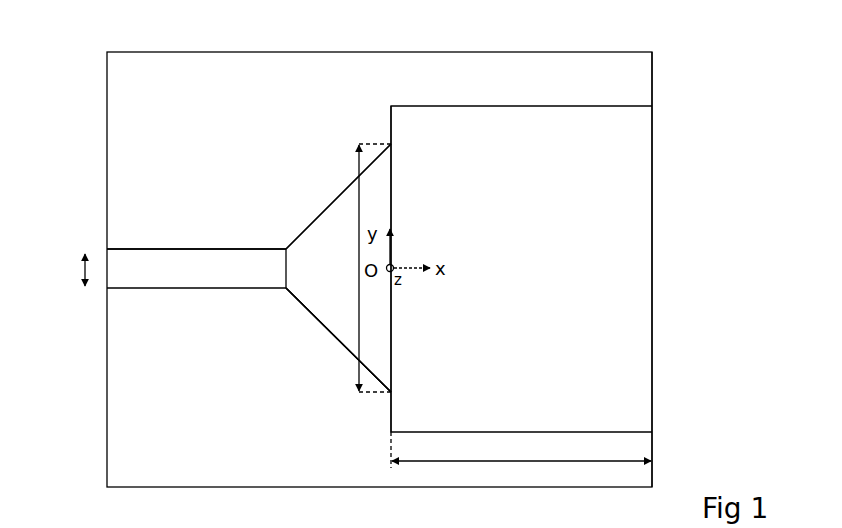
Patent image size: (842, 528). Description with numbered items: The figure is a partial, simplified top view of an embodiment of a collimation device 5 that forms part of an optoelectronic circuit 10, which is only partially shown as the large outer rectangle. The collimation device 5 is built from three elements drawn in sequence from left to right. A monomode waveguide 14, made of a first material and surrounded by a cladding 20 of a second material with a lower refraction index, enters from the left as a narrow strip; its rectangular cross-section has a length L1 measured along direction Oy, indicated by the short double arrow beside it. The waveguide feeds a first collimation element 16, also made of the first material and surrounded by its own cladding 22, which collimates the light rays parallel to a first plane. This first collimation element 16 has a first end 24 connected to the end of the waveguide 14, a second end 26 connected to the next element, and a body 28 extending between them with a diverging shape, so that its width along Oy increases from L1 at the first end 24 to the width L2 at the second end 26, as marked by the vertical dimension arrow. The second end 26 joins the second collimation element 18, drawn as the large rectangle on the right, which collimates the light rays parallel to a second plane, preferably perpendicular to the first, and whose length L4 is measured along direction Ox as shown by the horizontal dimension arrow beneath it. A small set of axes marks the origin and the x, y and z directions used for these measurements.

The optoelectronic circuit 10 is at (605, 51).
The collimation device 5 is at (655, 90).
The second collimation element 18 is at (622, 186).
The second end 26 is at (392, 175).
The monomode waveguide 14 is at (148, 268).
The cladding 20 is at (160, 247).
The first collimation element 16 is at (306, 224).
The body 28 is at (328, 207).
The first end 24 is at (295, 265).
The cladding 22 is at (345, 362).
The length of the waveguide cross-section L1 is at (67, 271).
The width at second end L2 is at (358, 163).
The length of the second collimation element L4 is at (513, 462).